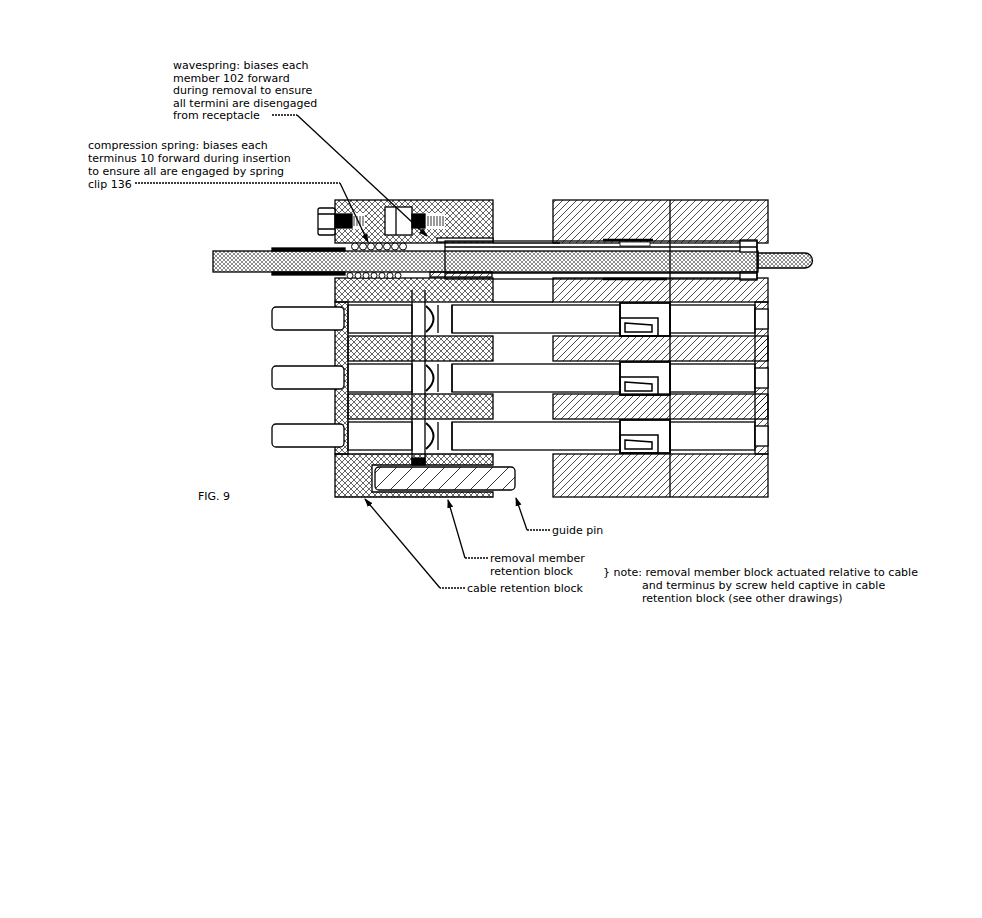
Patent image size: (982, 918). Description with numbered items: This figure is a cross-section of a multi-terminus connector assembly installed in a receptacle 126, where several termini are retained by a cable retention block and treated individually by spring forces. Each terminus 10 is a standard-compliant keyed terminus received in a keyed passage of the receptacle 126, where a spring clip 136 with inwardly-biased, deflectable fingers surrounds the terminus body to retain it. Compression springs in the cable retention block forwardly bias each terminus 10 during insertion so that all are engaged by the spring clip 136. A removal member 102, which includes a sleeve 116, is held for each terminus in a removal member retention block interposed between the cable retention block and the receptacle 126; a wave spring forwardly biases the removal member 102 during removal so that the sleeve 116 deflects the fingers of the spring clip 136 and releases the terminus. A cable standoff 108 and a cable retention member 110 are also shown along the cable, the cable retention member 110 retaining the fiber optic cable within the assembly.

The terminus 10 is at (807, 249).
The removal member 102 is at (543, 243).
The cable standoff 108 is at (508, 243).
The cable retention member 110 is at (283, 247).
The sleeve 116 is at (578, 182).
The receptacle 126 is at (730, 199).
The spring clip 136 is at (637, 242).